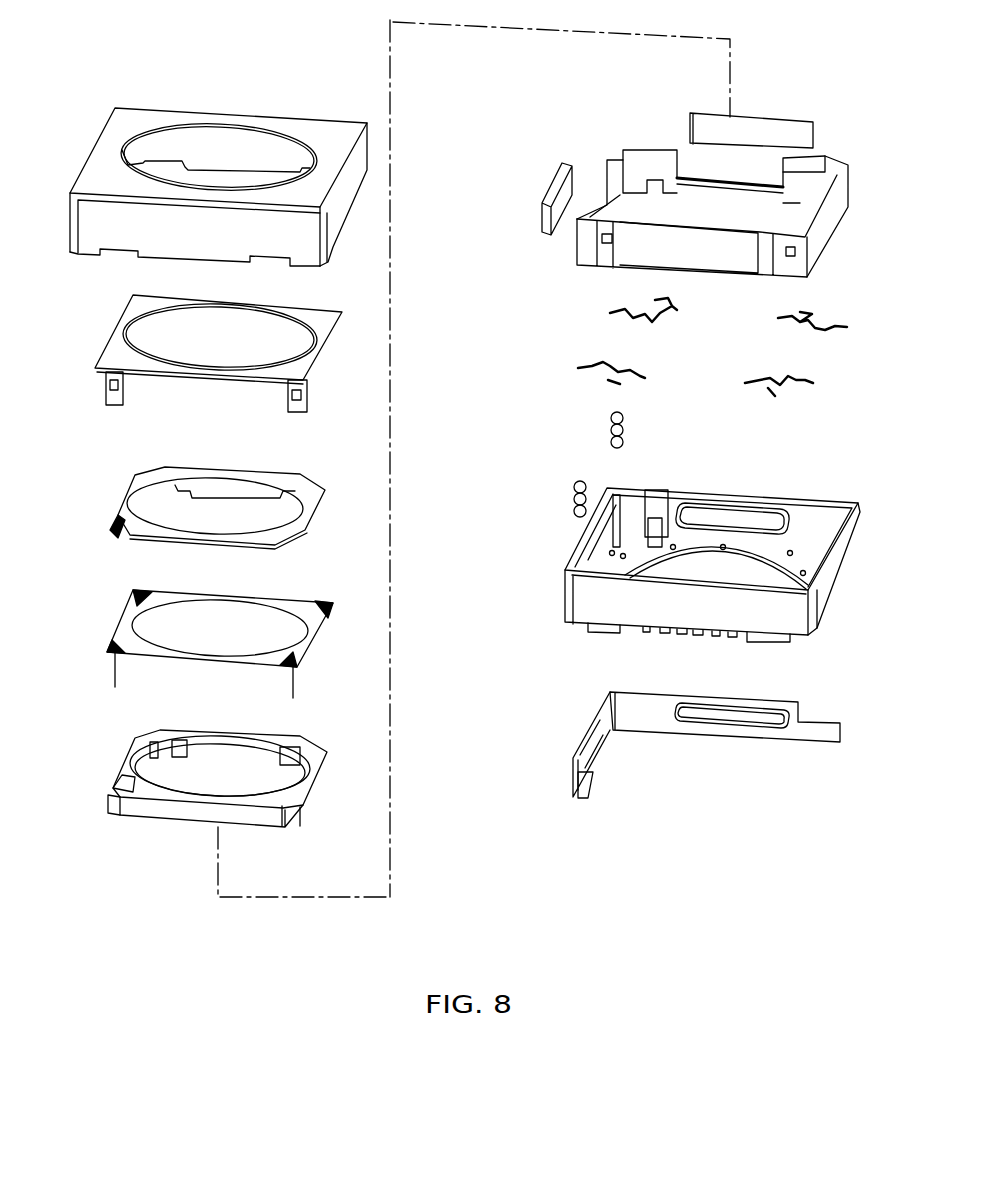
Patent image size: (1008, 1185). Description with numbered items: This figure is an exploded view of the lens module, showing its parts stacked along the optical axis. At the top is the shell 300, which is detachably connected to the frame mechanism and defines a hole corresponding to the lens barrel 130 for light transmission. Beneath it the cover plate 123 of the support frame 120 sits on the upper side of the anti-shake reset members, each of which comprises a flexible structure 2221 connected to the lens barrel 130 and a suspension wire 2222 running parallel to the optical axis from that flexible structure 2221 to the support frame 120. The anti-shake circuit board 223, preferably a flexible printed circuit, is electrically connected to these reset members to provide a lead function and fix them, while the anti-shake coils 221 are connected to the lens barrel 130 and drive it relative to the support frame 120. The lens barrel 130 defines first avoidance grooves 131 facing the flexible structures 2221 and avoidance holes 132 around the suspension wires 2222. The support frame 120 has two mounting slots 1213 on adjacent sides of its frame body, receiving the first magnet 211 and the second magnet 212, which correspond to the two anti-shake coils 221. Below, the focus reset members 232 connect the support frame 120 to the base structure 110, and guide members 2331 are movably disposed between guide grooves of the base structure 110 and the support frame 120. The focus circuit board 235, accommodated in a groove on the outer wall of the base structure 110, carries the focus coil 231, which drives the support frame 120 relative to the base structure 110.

The shell 300 is at (130, 118).
The cover plate 123 is at (110, 355).
The anti-shake circuit board 223 is at (122, 517).
The anti-shake coil 221 is at (110, 537).
The flexible structure 2221 is at (120, 638).
The suspension wire 2222 is at (113, 677).
The first avoidance groove 131 is at (115, 785).
The avoidance hole 132 is at (92, 801).
The lens barrel 130 is at (133, 808).
The support frame 120 is at (827, 218).
The mounting slot 1213 is at (700, 167).
The second magnet 212 is at (765, 133).
The first magnet 211 is at (552, 187).
The focus reset member 232 is at (827, 335).
The guide member 2331 is at (578, 480).
The base structure 110 is at (838, 573).
The focus circuit board 235 is at (648, 723).
The focus coil 231 is at (787, 733).